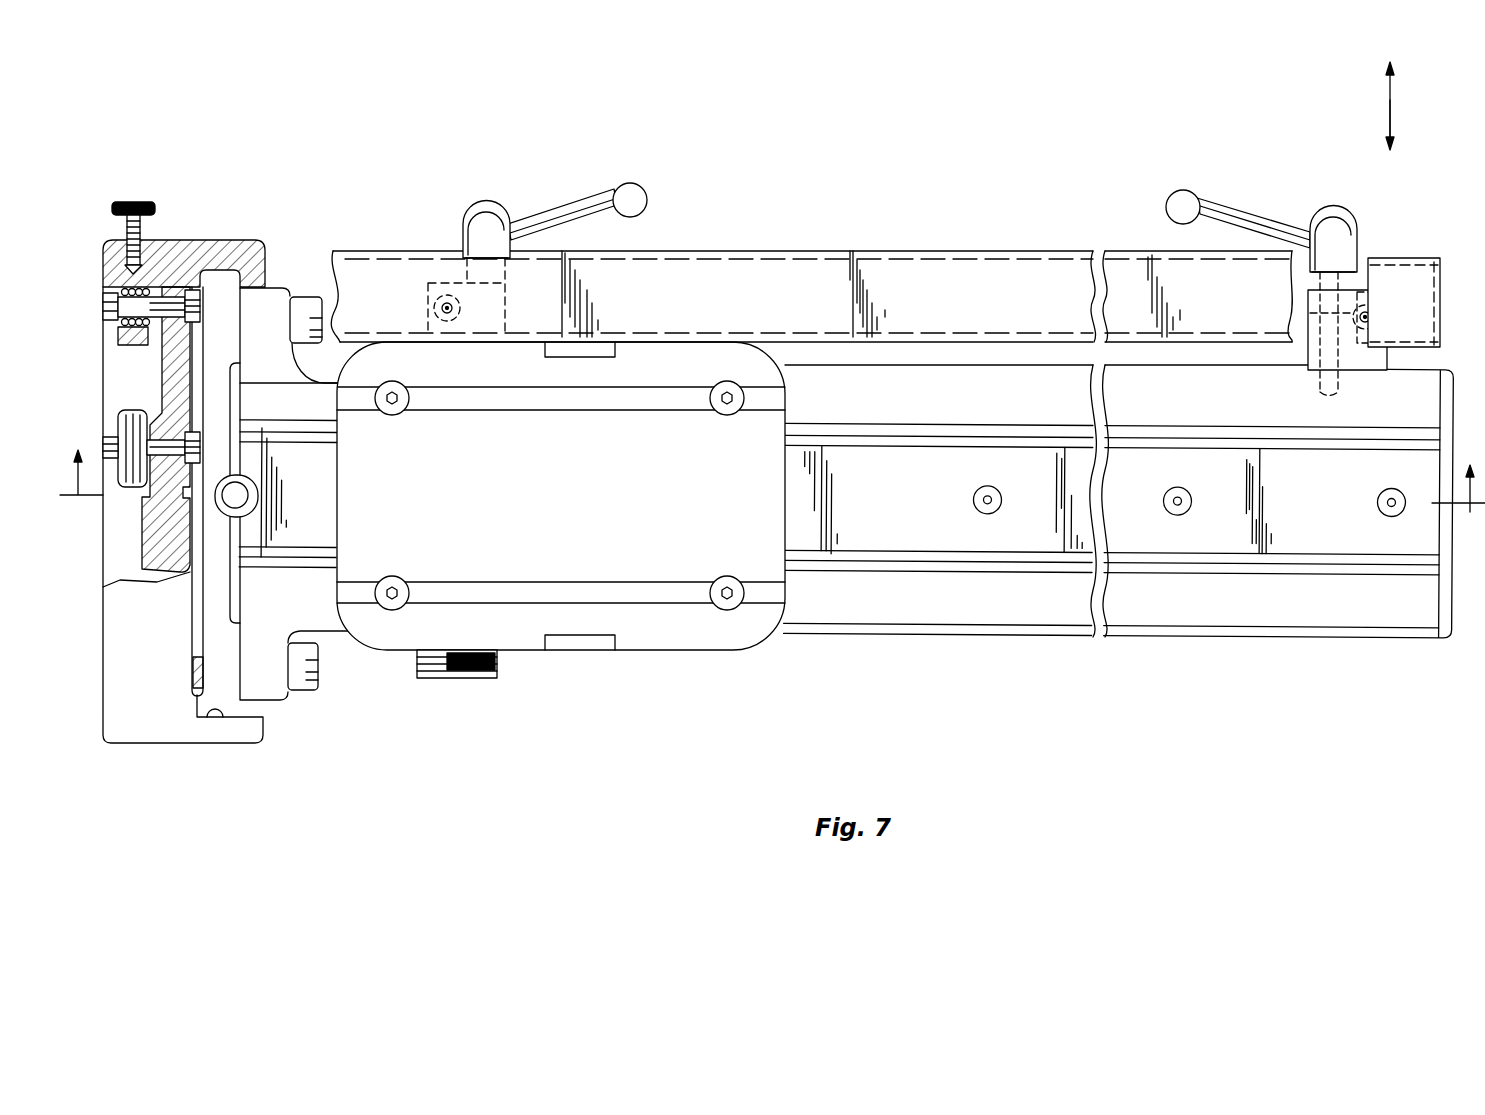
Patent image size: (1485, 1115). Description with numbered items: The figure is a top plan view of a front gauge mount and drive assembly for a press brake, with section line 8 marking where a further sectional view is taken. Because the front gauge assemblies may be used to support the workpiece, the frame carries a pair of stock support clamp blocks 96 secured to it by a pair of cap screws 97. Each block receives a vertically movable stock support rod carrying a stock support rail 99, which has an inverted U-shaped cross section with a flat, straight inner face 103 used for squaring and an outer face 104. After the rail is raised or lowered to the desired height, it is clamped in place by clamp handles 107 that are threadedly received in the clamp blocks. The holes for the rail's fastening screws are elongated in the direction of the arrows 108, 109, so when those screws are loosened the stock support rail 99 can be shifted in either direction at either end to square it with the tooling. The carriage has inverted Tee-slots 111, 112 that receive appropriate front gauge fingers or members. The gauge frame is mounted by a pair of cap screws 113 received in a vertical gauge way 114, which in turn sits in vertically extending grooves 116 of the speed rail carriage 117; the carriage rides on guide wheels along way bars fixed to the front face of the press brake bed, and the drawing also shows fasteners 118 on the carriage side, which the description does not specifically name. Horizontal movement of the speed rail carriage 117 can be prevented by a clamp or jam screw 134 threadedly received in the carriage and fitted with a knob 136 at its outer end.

The section line 8- 8 is at (772, 468).
The stock support clamp block 96 is at (1309, 336).
The cap screw 97 is at (1337, 300).
The stock support rail 99 is at (948, 266).
The inner face 103 is at (889, 345).
The outer face 104 is at (995, 252).
The clamp handle 107 is at (633, 194).
The arrow 108 is at (1388, 94).
The arrow 109 is at (1391, 123).
The inverted Tee-slot 111 is at (659, 397).
The inverted Tee-slot 112 is at (644, 598).
The cap screw 113 is at (306, 297).
The vertical gauge way 114 is at (241, 711).
The vertically extending groove 116 is at (253, 242).
The speed rail carriage 117 is at (149, 734).
The clamping bolt 118 is at (123, 341).
The clamp or jam screw 134 is at (141, 230).
The knob 136 is at (133, 203).